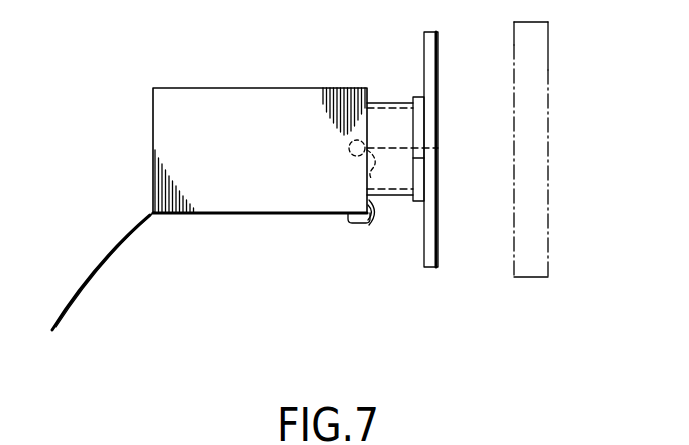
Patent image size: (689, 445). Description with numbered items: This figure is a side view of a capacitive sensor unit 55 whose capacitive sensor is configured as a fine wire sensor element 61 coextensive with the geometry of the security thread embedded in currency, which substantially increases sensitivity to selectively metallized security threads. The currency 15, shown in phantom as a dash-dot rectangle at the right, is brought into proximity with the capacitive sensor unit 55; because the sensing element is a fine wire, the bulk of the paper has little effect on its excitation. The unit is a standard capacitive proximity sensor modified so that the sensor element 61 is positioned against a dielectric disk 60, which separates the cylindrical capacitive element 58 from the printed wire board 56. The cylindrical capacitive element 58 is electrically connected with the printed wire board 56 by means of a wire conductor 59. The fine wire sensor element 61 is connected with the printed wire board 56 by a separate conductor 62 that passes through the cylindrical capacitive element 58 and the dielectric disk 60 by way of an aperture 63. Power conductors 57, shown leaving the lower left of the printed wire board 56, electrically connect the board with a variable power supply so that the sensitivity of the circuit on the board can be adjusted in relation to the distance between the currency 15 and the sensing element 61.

The currency 15 is at (548, 266).
The capacitive sensor unit 55 is at (497, 355).
The printed wire board 56 is at (277, 168).
The power conductors 57 is at (108, 250).
The cylindrical capacitive element 58 is at (386, 103).
The wire conductor 59 is at (373, 224).
The dielectric disk 60 is at (416, 97).
The fine wire sensor element 61 is at (438, 42).
The separate conductor 62 is at (367, 181).
The aperture 63 is at (424, 157).